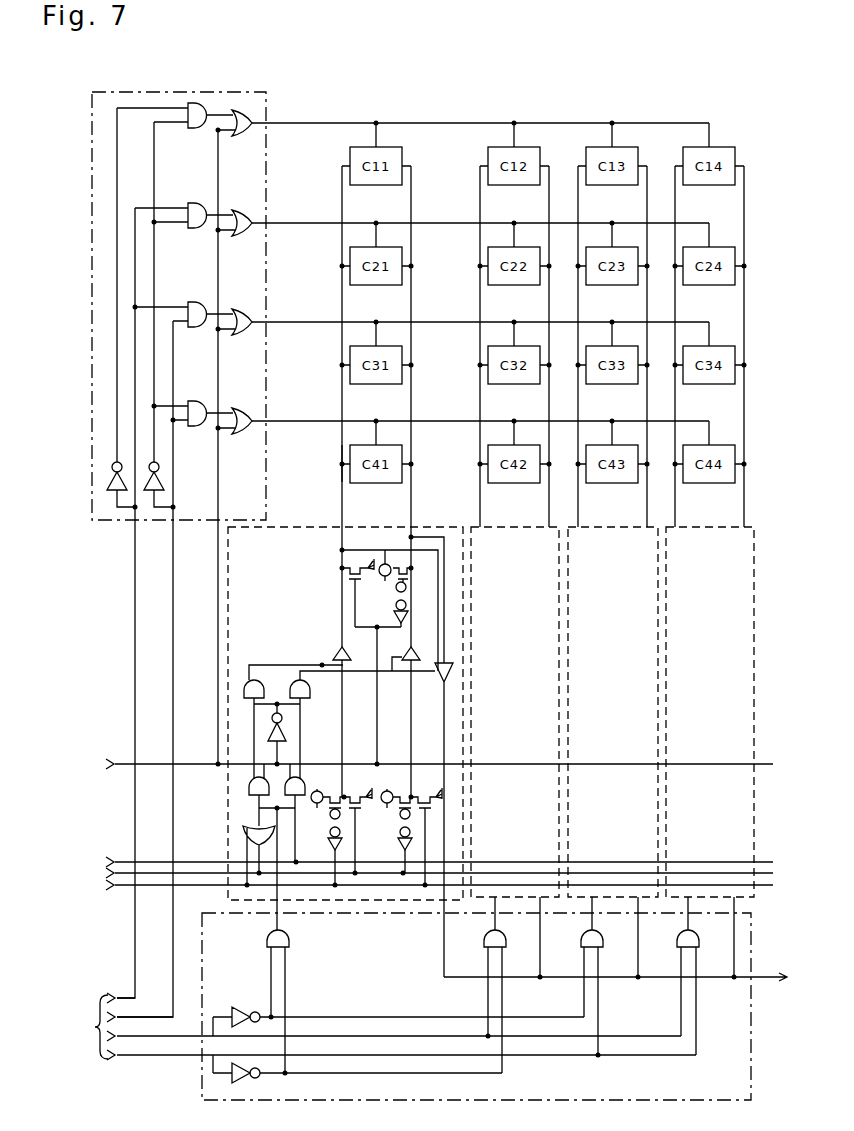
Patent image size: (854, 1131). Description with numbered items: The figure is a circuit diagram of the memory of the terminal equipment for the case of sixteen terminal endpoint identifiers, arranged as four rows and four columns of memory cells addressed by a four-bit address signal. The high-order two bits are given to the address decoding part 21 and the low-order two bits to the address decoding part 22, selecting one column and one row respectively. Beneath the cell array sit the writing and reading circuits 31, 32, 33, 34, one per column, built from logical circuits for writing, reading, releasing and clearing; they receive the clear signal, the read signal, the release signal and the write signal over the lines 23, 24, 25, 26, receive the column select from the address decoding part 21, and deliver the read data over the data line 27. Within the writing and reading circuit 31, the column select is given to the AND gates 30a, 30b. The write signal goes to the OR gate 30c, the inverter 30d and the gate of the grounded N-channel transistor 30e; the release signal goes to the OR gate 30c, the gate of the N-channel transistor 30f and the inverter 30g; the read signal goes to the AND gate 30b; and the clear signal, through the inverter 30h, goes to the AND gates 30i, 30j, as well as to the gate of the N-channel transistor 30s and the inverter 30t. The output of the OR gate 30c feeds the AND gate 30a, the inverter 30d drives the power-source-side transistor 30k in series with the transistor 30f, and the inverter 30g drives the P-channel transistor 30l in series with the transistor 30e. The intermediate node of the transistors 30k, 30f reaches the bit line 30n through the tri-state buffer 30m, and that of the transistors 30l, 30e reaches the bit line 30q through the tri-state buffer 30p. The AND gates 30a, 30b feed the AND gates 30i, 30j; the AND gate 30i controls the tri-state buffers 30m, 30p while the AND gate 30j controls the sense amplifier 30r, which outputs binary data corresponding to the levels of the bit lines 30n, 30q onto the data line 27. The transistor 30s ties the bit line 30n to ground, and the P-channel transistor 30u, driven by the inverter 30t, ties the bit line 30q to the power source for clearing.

The address decoding part 21 is at (725, 1100).
The address decoding part 22 is at (232, 92).
The line 23 is at (182, 762).
The line 24 is at (180, 861).
The line 25 is at (195, 873).
The line 26 is at (214, 887).
The data line 27 is at (764, 974).
The AND gate 30a is at (248, 786).
The AND gate 30b is at (296, 778).
The OR gate 30c is at (246, 830).
The inverter 30d is at (342, 844).
The N-channel transistor 30e is at (428, 795).
The N-channel transistor 30f is at (389, 792).
The inverter 30g is at (398, 847).
The inverter 30h is at (286, 727).
The AND gate 30i is at (250, 678).
The AND gate 30j is at (302, 690).
The transistor 30k is at (320, 797).
The P-channel transistor 30l is at (412, 792).
The tri-state buffer 30m is at (340, 650).
The bit line 30n is at (345, 432).
The tri-state buffer 30p is at (420, 653).
The bit line 30q is at (412, 510).
The sense amplifier 30r is at (452, 675).
The N-channel transistor 30s is at (355, 564).
The inverter 30t is at (394, 620).
The P-channel transistor 30u is at (403, 558).
The writing and reading circuit 31 is at (356, 571).
The writing and reading circuit 32 is at (508, 535).
The writing and reading circuit 33 is at (604, 535).
The writing and reading circuit 34 is at (702, 535).